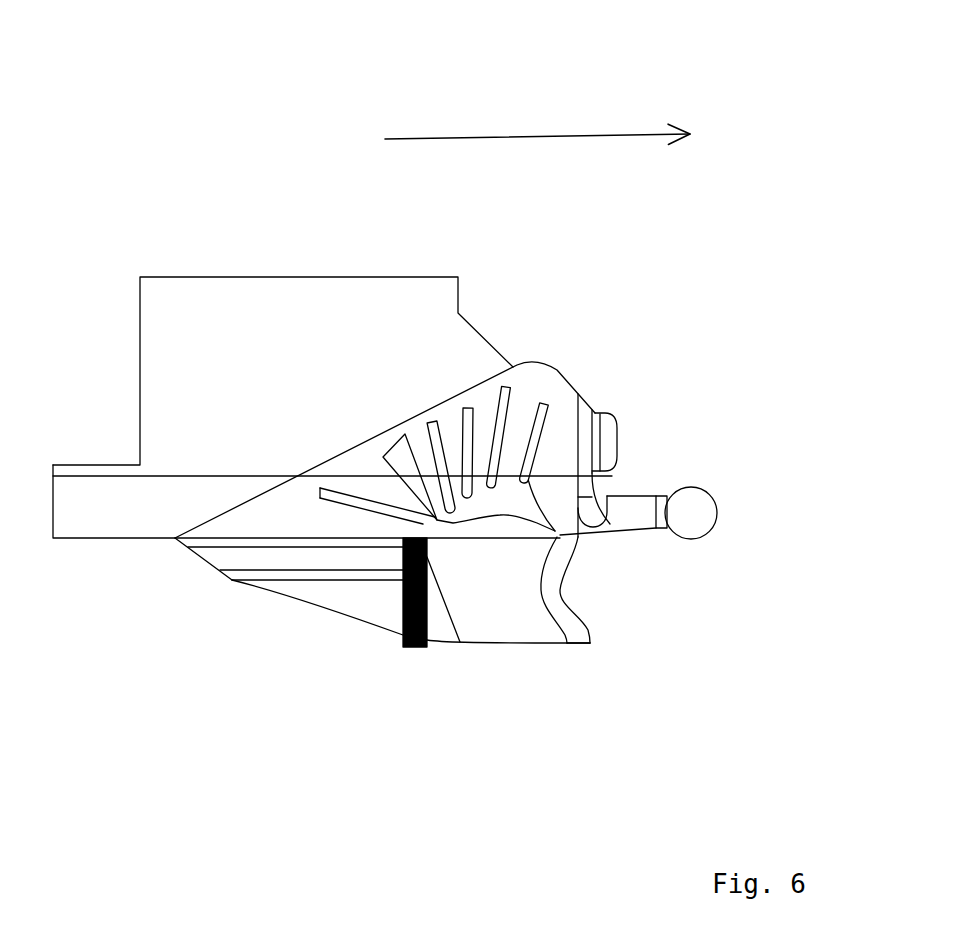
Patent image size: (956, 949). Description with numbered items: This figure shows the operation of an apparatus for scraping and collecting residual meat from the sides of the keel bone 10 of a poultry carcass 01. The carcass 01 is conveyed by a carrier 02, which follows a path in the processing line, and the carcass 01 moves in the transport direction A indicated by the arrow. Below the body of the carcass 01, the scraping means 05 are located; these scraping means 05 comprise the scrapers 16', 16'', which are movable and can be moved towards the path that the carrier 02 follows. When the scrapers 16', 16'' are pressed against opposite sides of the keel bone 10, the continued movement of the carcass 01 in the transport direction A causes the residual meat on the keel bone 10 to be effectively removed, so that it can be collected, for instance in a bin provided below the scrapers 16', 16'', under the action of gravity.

The transport direction A is at (513, 122).
The carcass 01 is at (588, 610).
The carrier 02 is at (285, 276).
The scraping means 05 is at (418, 662).
The keel bone 10 is at (347, 602).
The scraper 16' is at (498, 669).
The scraper 16'' is at (482, 635).